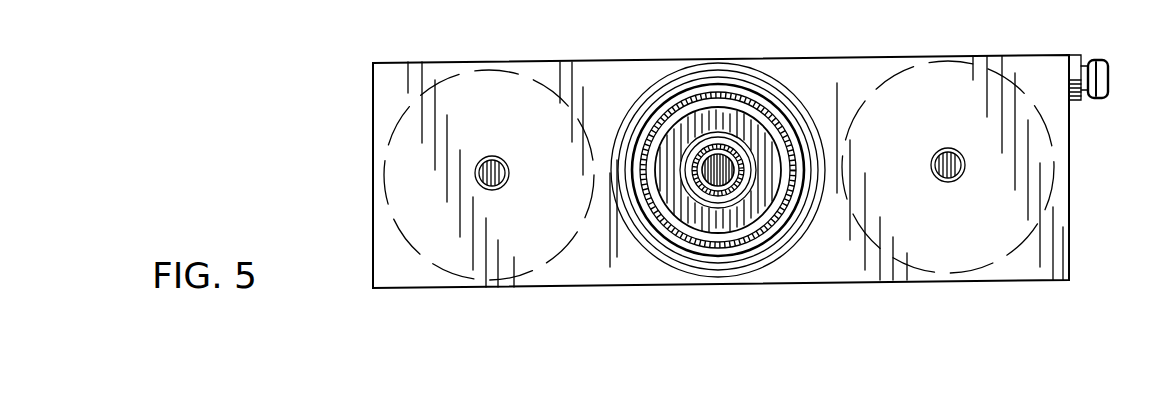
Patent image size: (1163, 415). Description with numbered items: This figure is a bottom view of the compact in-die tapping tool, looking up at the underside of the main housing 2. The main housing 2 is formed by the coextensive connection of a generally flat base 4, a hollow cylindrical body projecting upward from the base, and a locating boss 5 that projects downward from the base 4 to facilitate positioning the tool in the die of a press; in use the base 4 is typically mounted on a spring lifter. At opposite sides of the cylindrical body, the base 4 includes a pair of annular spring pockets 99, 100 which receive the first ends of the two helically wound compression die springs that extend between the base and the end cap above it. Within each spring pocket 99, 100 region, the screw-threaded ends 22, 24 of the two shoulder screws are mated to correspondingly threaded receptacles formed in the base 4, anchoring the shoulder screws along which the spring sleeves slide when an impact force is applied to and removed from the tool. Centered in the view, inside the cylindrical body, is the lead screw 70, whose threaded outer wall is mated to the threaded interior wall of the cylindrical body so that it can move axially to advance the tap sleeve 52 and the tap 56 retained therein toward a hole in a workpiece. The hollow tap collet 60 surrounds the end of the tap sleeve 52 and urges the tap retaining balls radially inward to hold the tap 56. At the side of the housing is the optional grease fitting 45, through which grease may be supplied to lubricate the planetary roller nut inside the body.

The main housing 2 is at (459, 307).
The base 4 is at (372, 91).
The locating boss 5 is at (690, 265).
The threaded end of shoulder screw 22 is at (509, 174).
The threaded end of shoulder screw 24 is at (963, 172).
The grease fitting 45 is at (1110, 70).
The tap sleeve 52 is at (690, 167).
The tap 56 is at (747, 177).
The tap collet 60 is at (695, 127).
The lead screw 70 is at (743, 100).
The spring pocket 99 is at (512, 67).
The spring pocket 100 is at (963, 58).